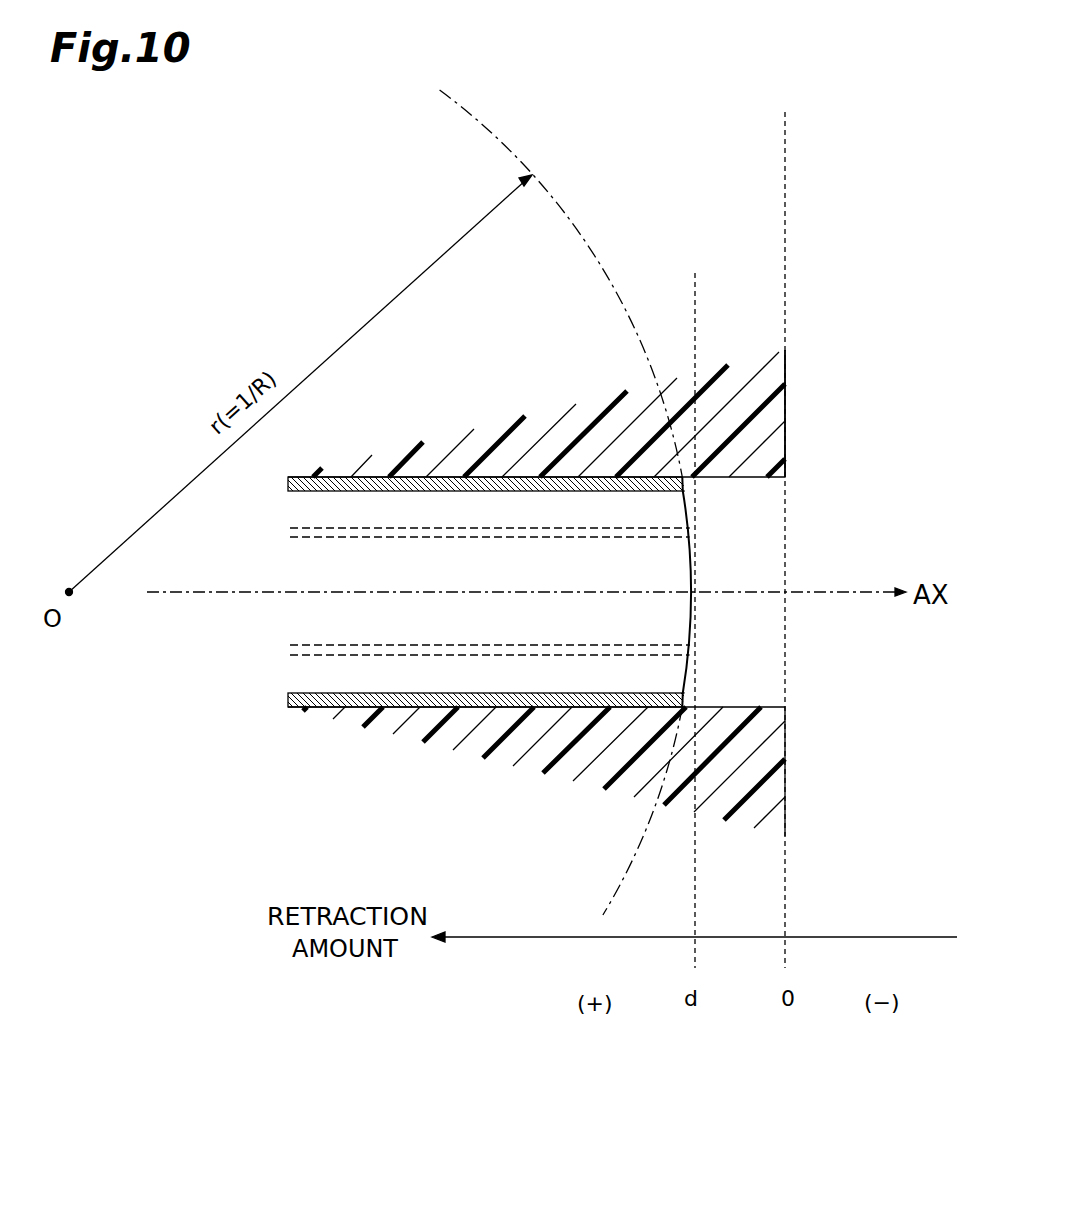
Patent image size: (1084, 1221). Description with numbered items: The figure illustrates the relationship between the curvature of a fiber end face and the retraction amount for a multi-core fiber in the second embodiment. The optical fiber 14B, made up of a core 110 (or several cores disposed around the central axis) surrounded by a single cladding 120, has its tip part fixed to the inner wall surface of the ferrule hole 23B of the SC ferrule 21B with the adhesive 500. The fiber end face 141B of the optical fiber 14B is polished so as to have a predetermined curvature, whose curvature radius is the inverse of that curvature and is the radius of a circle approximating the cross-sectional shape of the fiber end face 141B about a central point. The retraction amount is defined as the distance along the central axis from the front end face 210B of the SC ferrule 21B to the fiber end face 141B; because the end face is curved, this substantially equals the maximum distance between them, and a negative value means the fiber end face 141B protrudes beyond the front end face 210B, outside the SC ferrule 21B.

The adhesive 500 is at (452, 477).
The core 110 is at (343, 645).
The cladding 120 is at (303, 670).
The optical fiber 14B is at (270, 615).
The SC ferrule 21B is at (755, 286).
The front end face 210B is at (787, 418).
The ferrule hole 23B is at (748, 541).
The fiber end face 141B is at (700, 632).